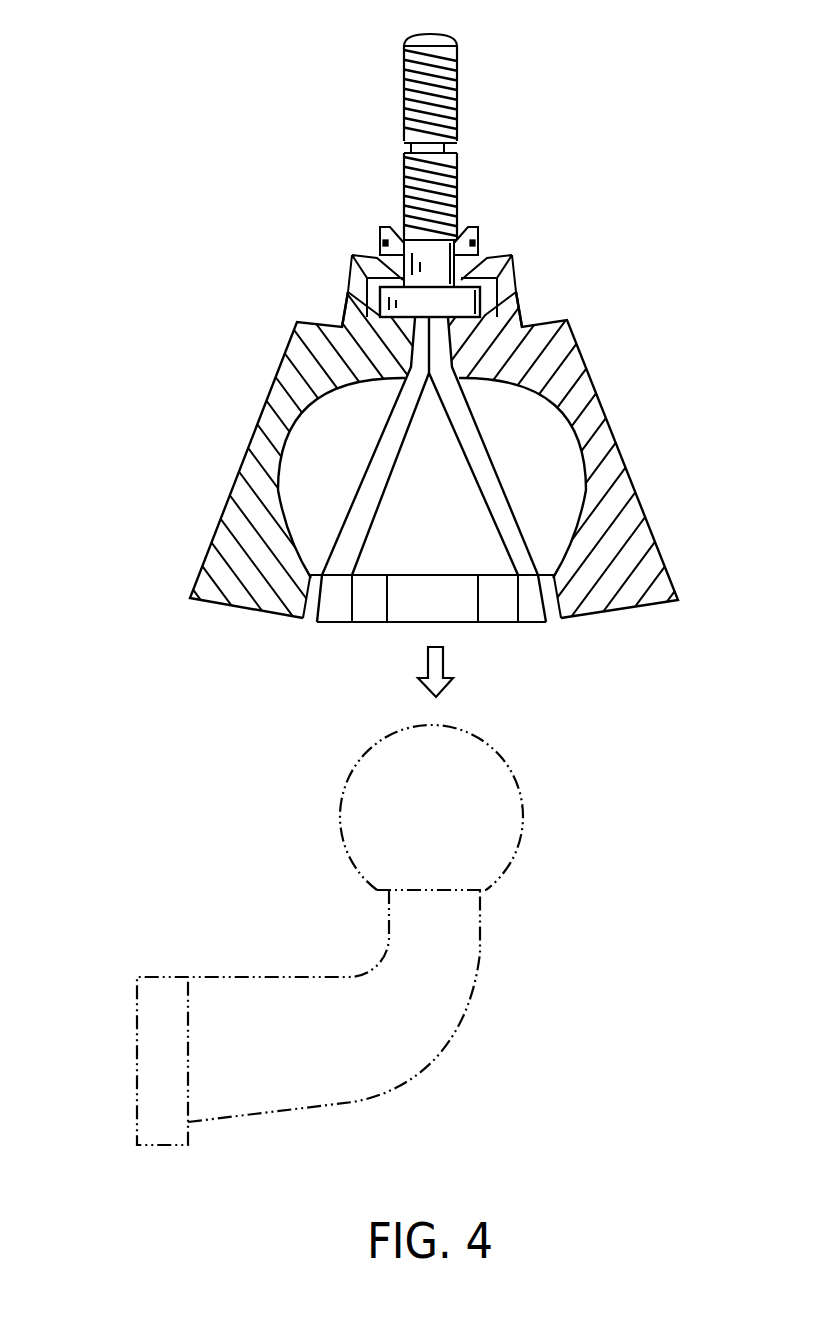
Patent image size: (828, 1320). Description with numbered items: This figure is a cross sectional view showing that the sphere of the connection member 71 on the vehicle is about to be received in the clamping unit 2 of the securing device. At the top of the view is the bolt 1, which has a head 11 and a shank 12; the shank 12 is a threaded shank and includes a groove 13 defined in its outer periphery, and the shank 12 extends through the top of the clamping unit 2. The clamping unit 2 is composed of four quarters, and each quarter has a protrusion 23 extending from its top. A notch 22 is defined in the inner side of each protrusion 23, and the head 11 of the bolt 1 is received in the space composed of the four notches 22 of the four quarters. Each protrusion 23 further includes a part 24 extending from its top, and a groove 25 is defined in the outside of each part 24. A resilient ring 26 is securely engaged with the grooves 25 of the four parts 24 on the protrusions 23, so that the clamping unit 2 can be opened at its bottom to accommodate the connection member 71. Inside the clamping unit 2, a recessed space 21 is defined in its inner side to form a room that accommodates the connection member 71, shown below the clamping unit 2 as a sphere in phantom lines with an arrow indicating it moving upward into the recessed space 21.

The bolt 1 is at (243, 37).
The shank 12 is at (404, 87).
The groove 13 is at (404, 143).
The head 11 is at (353, 254).
The groove 25 is at (478, 243).
The resilient ring 26 is at (478, 243).
The part 24 is at (470, 246).
The notch 22 is at (373, 302).
The protrusion 23 is at (513, 287).
The clamping unit 2 is at (175, 402).
The recessed space 21 is at (303, 500).
The connection member 71 is at (487, 826).